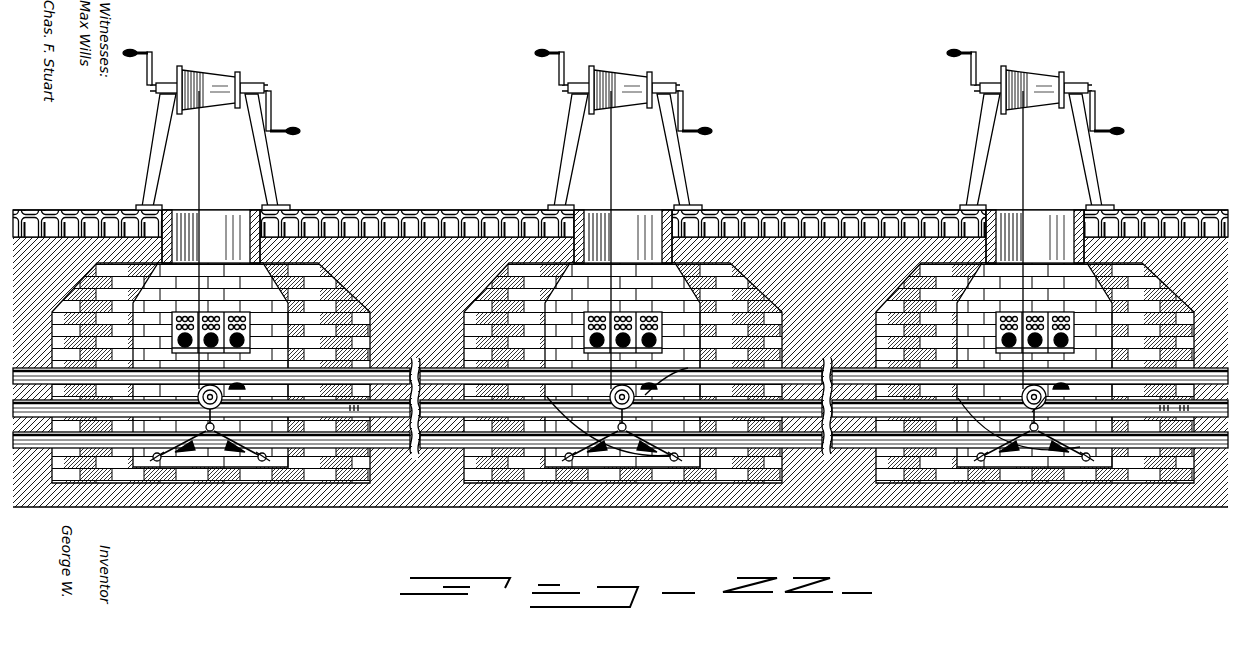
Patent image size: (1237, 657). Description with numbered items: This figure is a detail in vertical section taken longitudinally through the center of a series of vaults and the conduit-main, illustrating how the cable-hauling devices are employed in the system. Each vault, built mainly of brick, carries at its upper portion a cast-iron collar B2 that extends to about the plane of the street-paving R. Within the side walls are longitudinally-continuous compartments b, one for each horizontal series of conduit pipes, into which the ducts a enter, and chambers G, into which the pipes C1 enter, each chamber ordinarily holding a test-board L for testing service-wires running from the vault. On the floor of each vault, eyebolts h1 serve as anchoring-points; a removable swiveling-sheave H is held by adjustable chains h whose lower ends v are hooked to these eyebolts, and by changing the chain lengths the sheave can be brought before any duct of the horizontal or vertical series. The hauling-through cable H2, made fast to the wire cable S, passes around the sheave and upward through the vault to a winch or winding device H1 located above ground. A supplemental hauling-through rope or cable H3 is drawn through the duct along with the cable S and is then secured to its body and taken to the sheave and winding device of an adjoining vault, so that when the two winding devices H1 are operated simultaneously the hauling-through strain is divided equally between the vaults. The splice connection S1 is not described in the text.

The winch or winding device H1 is at (226, 70).
The hauling-through cable H2 is at (210, 240).
The supplemental hauling-through rope or cable H3 is at (613, 193).
The street-paving R is at (86, 212).
The cast-iron collar B2 is at (258, 240).
The pipes C1 is at (212, 331).
The test-board L is at (252, 326).
The chambers G is at (252, 340).
The ducts a is at (620, 409).
The compartments b is at (210, 407).
The swiveling-sheave H is at (198, 402).
The chains h is at (209, 433).
The eyebolts h1 is at (250, 458).
The lower ends of chains v is at (211, 450).
The wire cable S is at (1039, 395).
The cable splice S' S1 is at (415, 395).